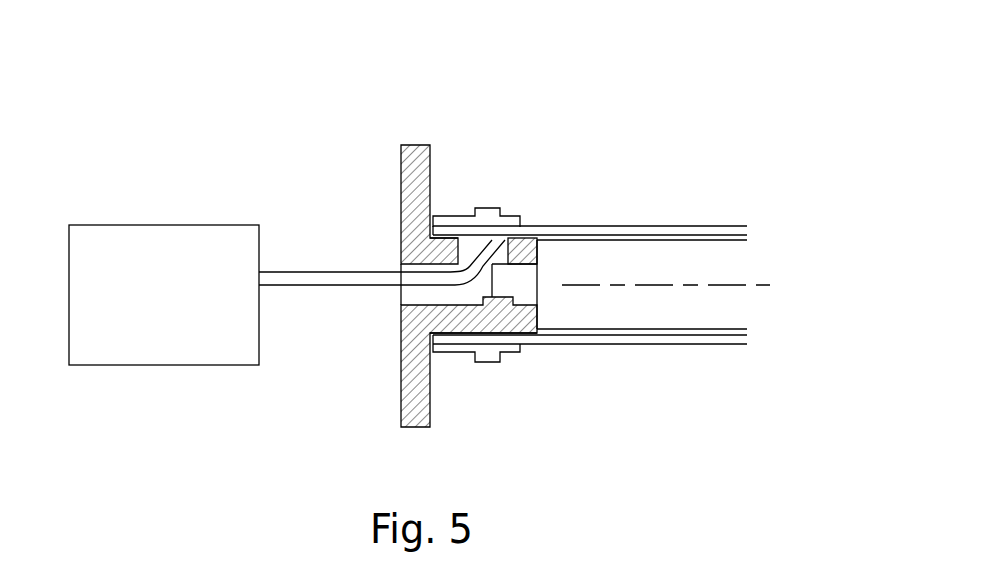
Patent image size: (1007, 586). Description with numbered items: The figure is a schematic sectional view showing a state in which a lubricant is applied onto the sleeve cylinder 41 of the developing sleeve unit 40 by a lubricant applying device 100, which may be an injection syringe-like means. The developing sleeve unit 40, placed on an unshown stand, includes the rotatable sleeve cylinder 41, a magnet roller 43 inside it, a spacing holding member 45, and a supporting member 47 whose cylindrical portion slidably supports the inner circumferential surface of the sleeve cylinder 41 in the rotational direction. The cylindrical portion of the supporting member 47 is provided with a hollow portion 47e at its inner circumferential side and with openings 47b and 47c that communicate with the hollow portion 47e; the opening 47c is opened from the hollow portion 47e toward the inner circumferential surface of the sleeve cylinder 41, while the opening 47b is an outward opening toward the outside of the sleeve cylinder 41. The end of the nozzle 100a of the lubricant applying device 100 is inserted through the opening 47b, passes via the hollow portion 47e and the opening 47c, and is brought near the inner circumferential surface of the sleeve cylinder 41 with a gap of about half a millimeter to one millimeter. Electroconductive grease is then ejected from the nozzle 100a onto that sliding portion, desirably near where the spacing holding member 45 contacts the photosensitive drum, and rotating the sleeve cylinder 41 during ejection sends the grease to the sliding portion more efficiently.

The lubricant applying device 100 is at (127, 210).
The nozzle 100a is at (333, 272).
The developing sleeve unit 40 is at (614, 160).
The supporting member 47 is at (417, 143).
The opening 47b is at (400, 297).
The opening 47c is at (472, 240).
The hollow portion 47e is at (472, 292).
The spacing holding member 45 is at (497, 208).
The sleeve cylinder 41 is at (578, 228).
The magnet roller 43 is at (690, 265).